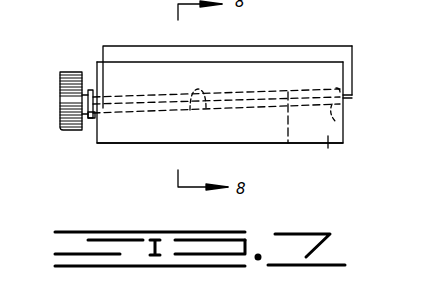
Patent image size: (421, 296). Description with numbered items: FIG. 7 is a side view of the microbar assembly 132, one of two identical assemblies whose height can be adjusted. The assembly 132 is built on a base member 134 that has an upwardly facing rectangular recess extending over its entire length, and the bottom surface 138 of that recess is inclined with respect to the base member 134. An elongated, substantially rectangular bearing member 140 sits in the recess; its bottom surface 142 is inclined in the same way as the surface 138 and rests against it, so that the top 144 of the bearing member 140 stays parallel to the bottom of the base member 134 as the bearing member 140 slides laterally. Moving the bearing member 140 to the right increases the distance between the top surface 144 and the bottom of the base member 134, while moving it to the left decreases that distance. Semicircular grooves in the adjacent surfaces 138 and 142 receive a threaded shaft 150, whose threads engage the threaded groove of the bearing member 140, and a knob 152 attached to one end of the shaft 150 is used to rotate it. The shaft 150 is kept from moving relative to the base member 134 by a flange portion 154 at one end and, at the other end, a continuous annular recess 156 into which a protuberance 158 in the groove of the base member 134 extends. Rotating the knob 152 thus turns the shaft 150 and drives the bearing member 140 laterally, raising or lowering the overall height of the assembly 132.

The microbar assembly 132 is at (166, 128).
The base member 134 is at (328, 148).
The bottom surface 138 is at (205, 109).
The bearing member 140 is at (269, 47).
The bottom surface 142 is at (352, 96).
The top 144 is at (334, 46).
The threaded shaft 150 is at (90, 88).
The knob 152 is at (63, 78).
The flange portion 154 is at (93, 122).
The continuous annular recess 156 is at (333, 86).
The protuberance 158 is at (347, 121).